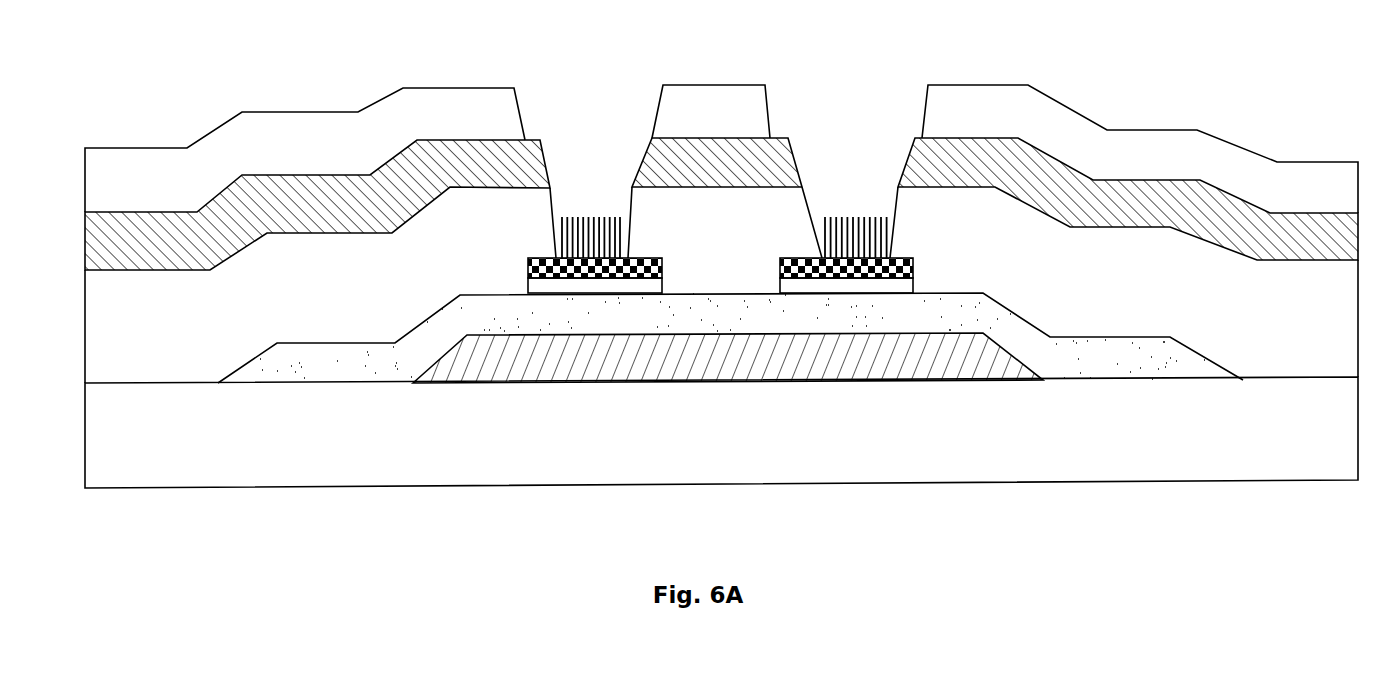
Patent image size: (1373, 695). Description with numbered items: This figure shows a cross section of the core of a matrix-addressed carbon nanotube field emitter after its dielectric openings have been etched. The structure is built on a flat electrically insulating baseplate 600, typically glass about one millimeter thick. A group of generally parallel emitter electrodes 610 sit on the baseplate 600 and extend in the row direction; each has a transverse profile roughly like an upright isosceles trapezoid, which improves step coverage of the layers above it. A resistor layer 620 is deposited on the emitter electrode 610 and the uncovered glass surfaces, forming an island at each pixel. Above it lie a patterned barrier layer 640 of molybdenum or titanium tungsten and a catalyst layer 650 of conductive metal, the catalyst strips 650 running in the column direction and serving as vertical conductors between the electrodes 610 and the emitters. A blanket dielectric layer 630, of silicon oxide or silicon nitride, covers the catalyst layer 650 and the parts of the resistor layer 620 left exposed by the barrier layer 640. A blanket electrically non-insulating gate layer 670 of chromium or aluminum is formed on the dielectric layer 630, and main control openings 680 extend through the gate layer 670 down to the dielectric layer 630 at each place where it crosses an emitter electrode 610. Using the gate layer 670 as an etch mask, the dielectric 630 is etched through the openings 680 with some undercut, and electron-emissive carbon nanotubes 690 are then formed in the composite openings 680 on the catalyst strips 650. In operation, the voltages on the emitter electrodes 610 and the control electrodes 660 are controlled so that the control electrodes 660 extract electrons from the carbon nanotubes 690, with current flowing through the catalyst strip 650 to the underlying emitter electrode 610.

The baseplate 600 is at (120, 443).
The emitter electrode 610 is at (483, 358).
The resistor layer 620 is at (302, 367).
The dielectric layer 630 is at (187, 348).
The barrier layer 640 is at (575, 282).
The catalyst layer 650 is at (880, 265).
The control electrode 660 is at (1163, 198).
The gate layer 670 is at (1290, 188).
The main control opening 680 is at (585, 137).
The electron-emissive carbon nanotube 690 is at (845, 223).